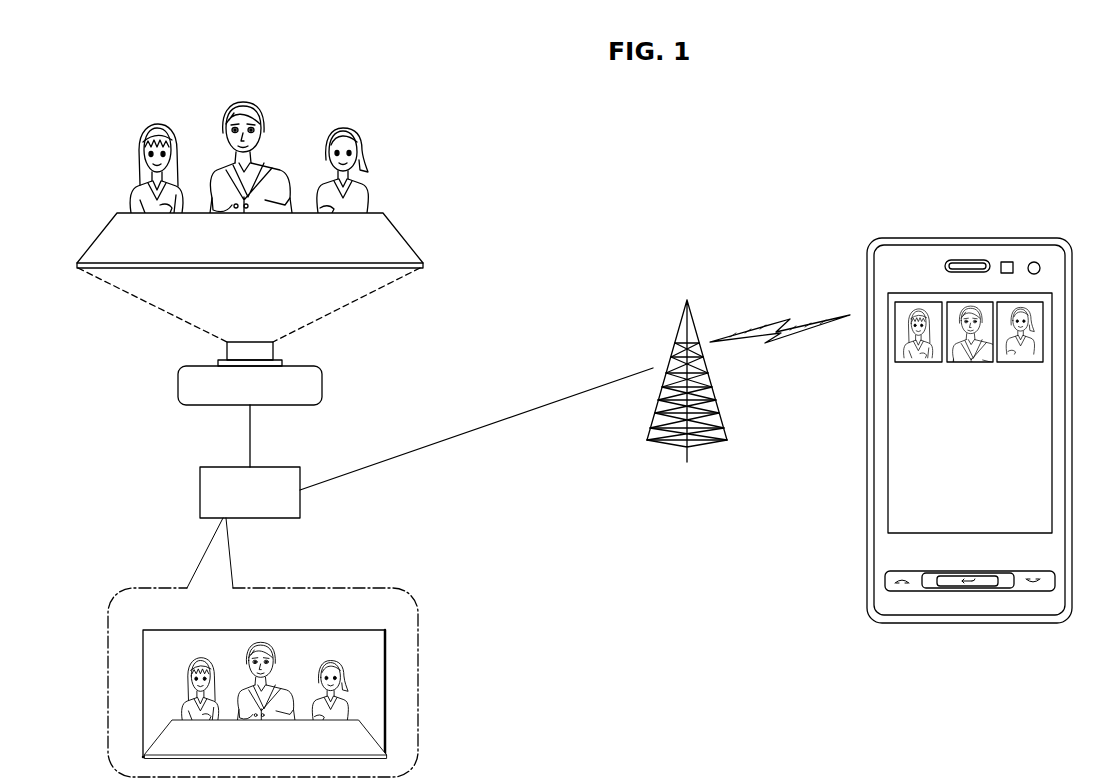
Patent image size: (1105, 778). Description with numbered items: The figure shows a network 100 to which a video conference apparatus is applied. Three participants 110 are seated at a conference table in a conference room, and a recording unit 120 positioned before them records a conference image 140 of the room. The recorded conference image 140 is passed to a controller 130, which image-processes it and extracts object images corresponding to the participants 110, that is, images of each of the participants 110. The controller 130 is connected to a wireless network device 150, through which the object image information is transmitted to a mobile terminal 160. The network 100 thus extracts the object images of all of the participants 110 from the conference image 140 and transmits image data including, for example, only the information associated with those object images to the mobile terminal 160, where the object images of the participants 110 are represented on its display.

The network 100 is at (690, 152).
The participants 110 is at (403, 237).
The recording unit 120 is at (307, 367).
The controller 130 is at (267, 467).
The conference image 140 is at (418, 690).
The wireless network device 150 is at (688, 330).
The mobile terminal 160 is at (970, 623).